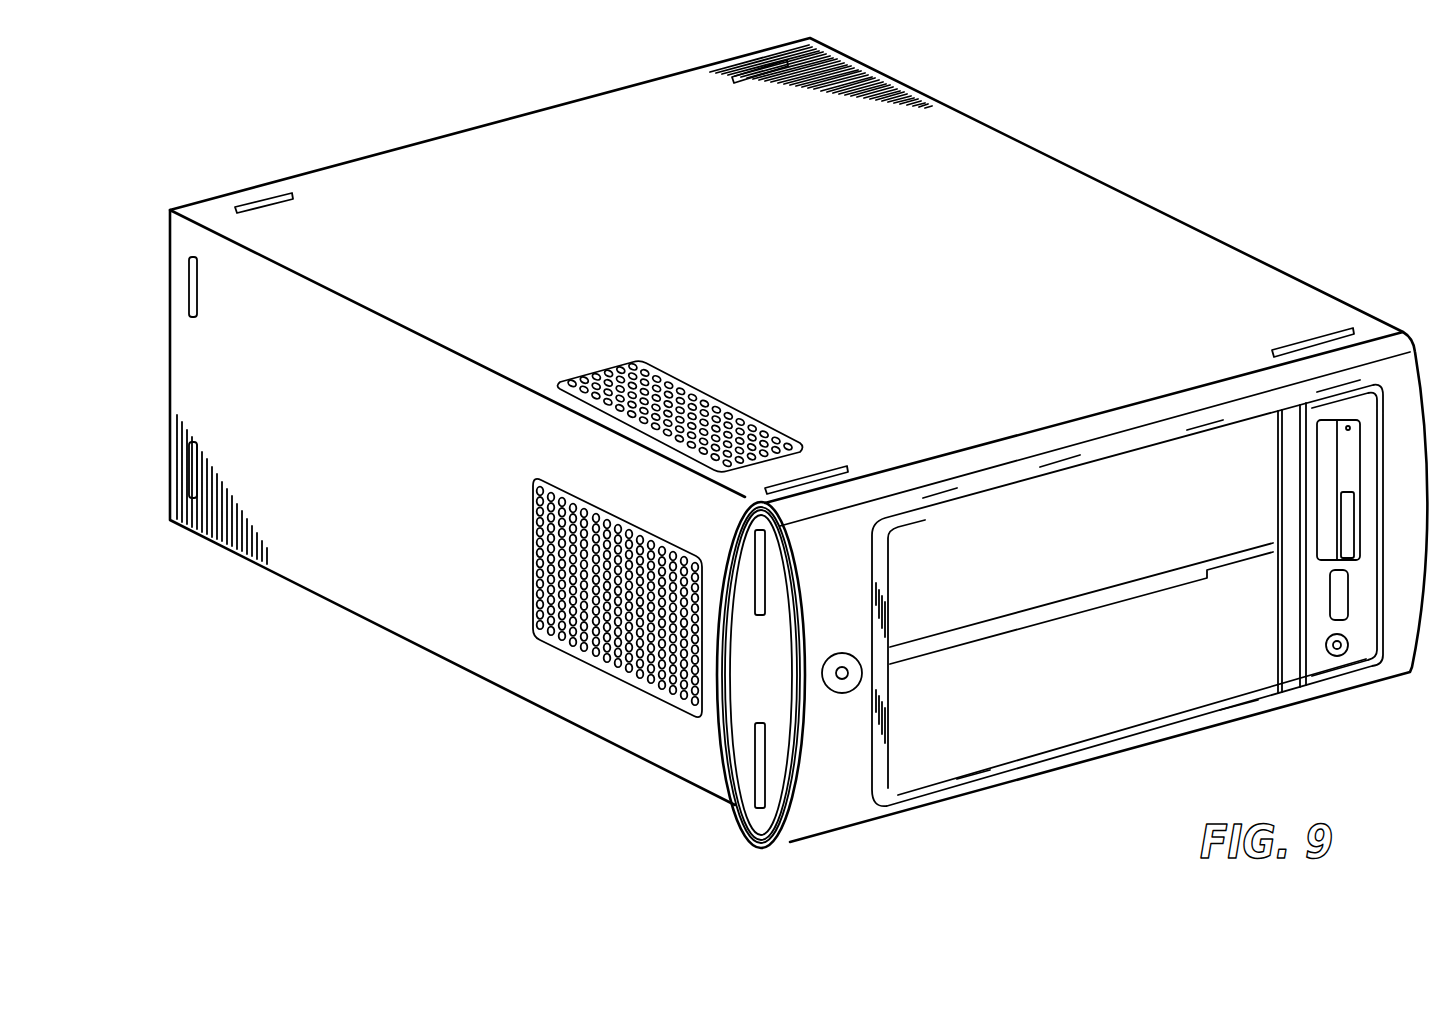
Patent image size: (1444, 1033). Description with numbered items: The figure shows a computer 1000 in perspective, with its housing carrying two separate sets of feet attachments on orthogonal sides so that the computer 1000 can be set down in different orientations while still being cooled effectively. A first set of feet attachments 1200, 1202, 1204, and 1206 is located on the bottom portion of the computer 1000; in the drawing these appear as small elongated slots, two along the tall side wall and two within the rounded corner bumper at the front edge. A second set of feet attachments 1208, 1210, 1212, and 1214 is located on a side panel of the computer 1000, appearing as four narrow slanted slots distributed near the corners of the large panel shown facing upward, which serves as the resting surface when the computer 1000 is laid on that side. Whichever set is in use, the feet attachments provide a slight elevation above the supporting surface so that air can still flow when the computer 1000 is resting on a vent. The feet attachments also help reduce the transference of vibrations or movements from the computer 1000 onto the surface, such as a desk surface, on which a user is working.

The computer 1000 is at (1027, 727).
The feet attachment 1200 is at (188, 290).
The feet attachment 1202 is at (188, 483).
The feet attachment 1204 is at (753, 560).
The feet attachment 1206 is at (760, 788).
The feet attachment 1208 is at (833, 463).
The feet attachment 1210 is at (1302, 342).
The feet attachment 1212 is at (258, 201).
The feet attachment 1214 is at (747, 63).